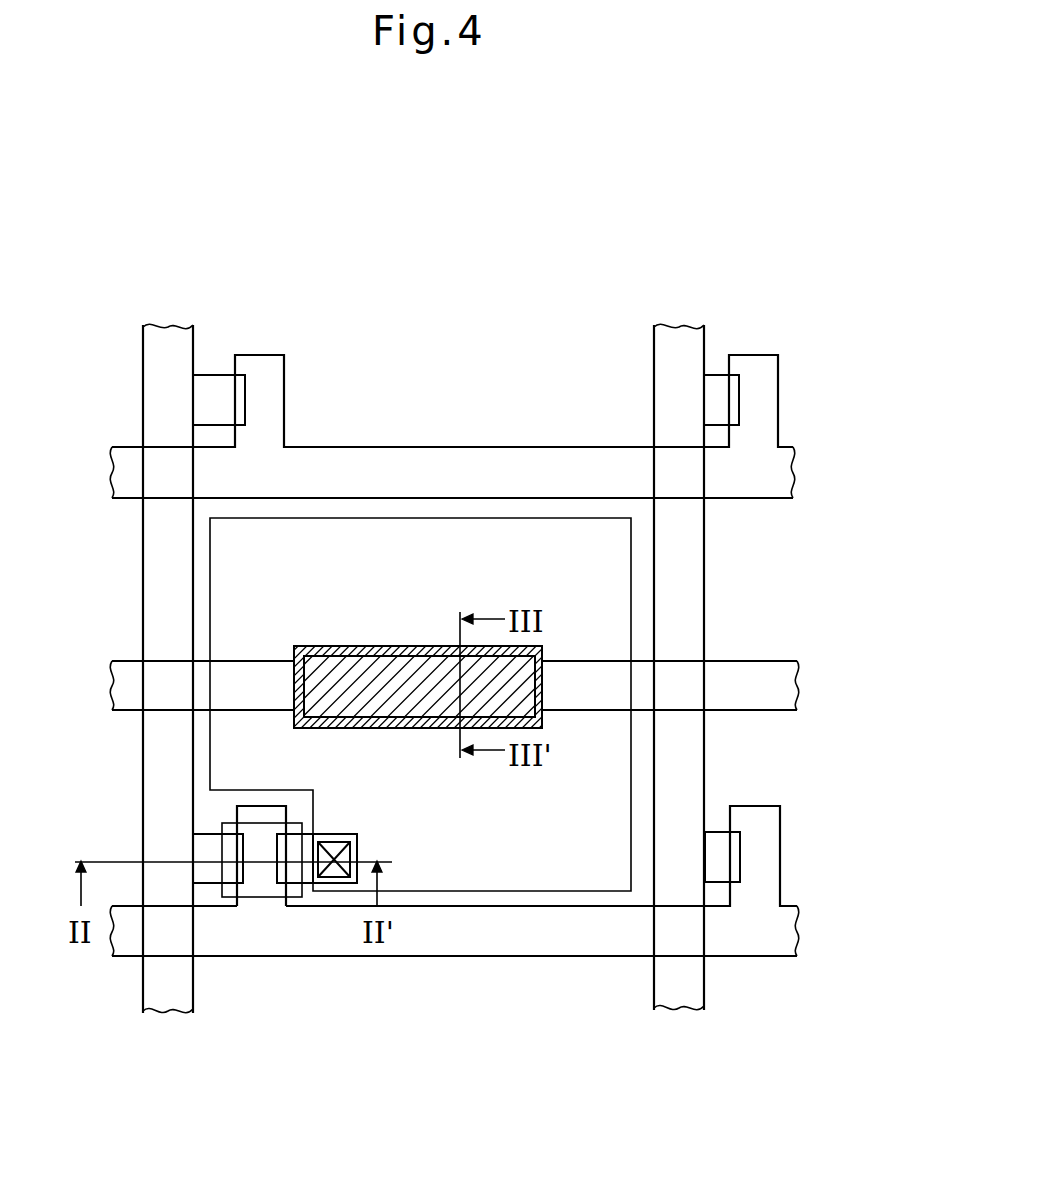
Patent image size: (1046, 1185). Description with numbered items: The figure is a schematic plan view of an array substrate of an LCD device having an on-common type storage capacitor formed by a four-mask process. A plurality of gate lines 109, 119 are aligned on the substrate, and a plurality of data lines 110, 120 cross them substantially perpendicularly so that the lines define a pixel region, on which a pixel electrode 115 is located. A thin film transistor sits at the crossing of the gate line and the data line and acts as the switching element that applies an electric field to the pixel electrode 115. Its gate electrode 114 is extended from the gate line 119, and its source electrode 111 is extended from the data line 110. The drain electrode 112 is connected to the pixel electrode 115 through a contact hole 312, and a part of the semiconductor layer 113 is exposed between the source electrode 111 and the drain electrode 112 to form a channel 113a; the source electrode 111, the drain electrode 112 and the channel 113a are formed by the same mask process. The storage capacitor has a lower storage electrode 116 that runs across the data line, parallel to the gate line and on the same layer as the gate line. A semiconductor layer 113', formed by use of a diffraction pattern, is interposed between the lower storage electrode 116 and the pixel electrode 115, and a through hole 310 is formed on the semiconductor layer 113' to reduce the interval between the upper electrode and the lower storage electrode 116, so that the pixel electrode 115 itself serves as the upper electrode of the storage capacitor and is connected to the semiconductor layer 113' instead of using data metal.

The gate line 109 is at (773, 471).
The data line 110 is at (168, 997).
The source electrode 111 is at (242, 878).
The drain electrode 112 is at (295, 877).
The semiconductor layer 113 is at (320, 836).
The channel 113a is at (262, 875).
The semiconductor layer 113' is at (418, 639).
The gate electrode 114 is at (261, 814).
The pixel electrode 115 is at (621, 607).
The lower storage electrode 116 is at (771, 685).
The gate line 119 is at (757, 928).
The data line 120 is at (680, 1000).
The through hole 310 is at (376, 657).
The contact hole 312 is at (352, 850).